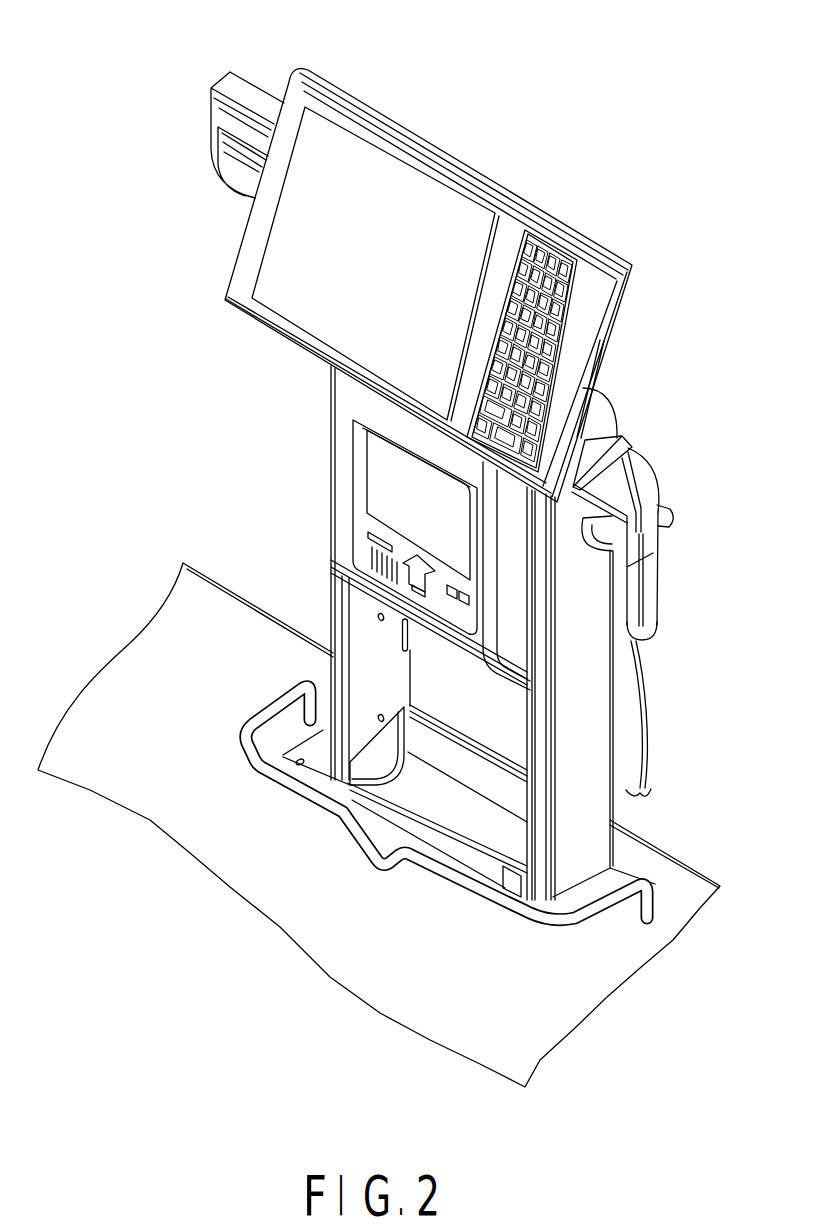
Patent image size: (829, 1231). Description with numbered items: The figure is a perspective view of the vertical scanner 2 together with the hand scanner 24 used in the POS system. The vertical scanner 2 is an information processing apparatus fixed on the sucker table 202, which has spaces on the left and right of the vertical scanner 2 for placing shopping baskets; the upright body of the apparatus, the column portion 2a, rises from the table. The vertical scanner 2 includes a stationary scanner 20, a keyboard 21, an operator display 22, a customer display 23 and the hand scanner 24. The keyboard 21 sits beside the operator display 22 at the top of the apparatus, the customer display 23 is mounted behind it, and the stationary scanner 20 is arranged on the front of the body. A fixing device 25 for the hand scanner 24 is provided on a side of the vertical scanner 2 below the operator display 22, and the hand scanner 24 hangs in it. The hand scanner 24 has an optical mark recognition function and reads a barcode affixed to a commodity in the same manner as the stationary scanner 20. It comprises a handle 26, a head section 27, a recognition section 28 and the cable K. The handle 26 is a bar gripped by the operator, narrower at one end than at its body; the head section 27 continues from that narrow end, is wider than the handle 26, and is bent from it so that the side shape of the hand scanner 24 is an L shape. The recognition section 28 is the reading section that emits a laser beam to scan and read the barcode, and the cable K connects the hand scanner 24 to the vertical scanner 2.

The vertical scanner 2 is at (584, 187).
The column (pillar) of terminal 2a is at (593, 811).
The stationary scanner 20 is at (377, 468).
The keyboard 21 is at (570, 266).
The operator display 22 is at (392, 170).
The customer display 23 is at (252, 84).
The hand scanner 24 is at (650, 634).
The fixing device 25 is at (668, 510).
The handle 26 is at (648, 580).
The head section 27 is at (640, 473).
The recognition section 28 is at (630, 443).
The cable K is at (642, 715).
The sucker table 202 is at (617, 983).